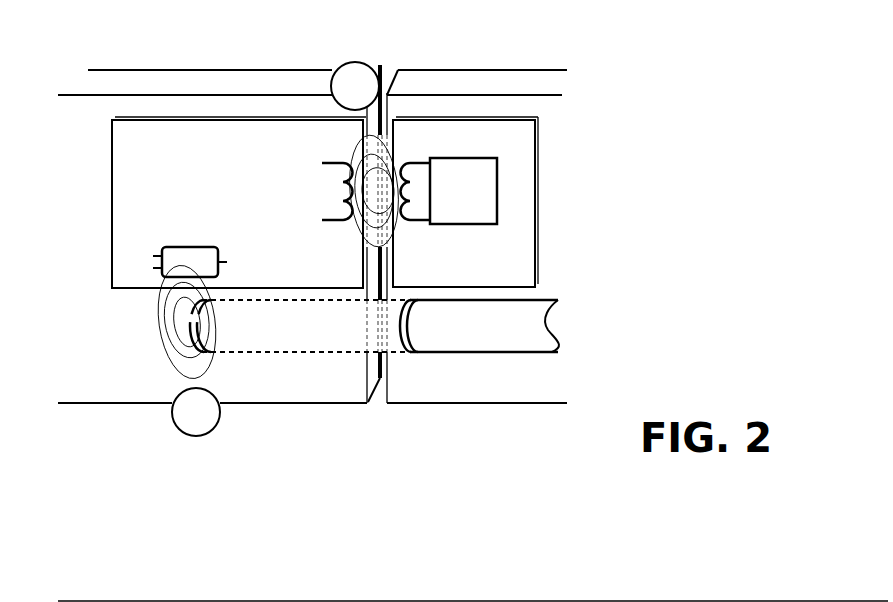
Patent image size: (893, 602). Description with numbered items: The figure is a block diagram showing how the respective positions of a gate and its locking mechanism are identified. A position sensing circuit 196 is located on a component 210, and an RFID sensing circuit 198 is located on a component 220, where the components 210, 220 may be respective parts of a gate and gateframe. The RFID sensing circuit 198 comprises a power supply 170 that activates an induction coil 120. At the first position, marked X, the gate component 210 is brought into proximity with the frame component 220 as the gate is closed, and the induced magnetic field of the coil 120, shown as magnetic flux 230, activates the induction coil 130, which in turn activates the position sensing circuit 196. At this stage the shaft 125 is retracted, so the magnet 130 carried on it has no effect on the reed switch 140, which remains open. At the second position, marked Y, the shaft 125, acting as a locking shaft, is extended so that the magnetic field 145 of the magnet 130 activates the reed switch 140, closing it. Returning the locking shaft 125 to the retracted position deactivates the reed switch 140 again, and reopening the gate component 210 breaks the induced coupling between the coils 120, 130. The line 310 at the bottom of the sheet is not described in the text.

The component 210 is at (211, 85).
The component 220 is at (505, 80).
The position sensing circuit 196 is at (239, 202).
The RFID sensing circuit 198 is at (465, 202).
The magnetic flux 230 is at (360, 152).
The induction coil 130 is at (332, 222).
The induction coil 120 is at (415, 222).
The power supply 170 is at (463, 191).
The shaft 125 is at (538, 352).
The reed switch 140 is at (192, 247).
The magnetic field 145 is at (162, 338).
The ground line 310 is at (473, 590).